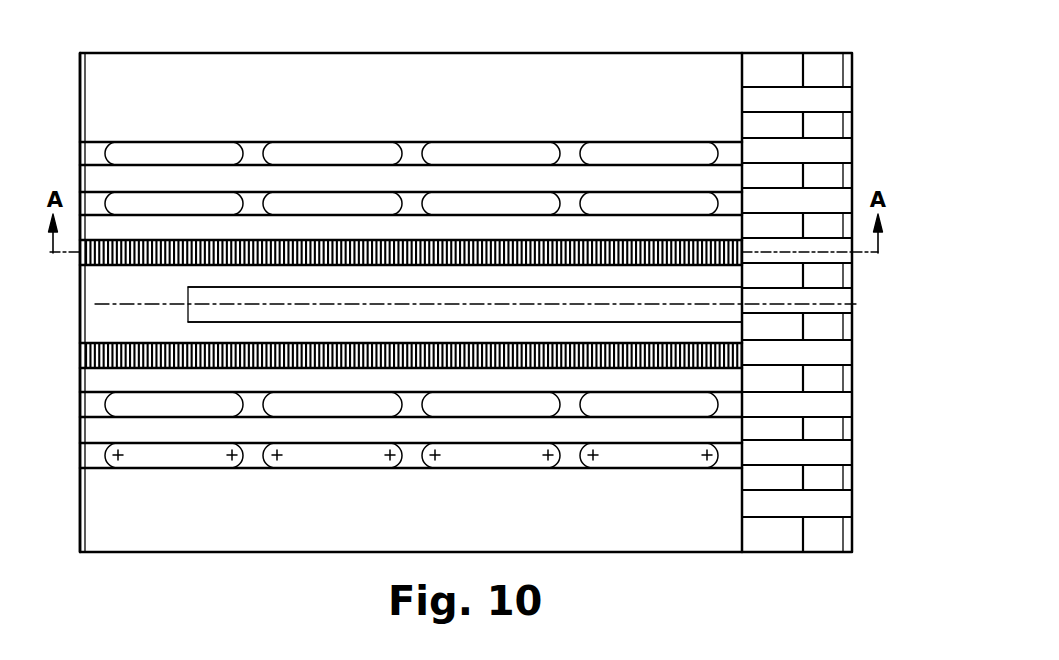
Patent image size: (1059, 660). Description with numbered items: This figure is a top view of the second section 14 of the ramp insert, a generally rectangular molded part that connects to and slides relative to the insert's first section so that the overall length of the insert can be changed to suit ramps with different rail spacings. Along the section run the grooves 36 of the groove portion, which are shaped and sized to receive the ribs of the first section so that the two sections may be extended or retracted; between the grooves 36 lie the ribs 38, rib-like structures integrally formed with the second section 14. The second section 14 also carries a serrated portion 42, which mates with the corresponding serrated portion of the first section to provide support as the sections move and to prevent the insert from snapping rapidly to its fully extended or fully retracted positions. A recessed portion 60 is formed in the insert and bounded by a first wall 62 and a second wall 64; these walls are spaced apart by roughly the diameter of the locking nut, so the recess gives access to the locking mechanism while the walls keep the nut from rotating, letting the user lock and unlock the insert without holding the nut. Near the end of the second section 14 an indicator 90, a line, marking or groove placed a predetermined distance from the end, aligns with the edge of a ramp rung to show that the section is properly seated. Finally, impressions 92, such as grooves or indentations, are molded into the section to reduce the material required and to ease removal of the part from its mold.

The second section 14 is at (859, 83).
The grooves 36 is at (92, 208).
The ribs 38 is at (540, 230).
The serrated portion 42 is at (448, 243).
The recessed portion 60 is at (202, 312).
The first wall 62 is at (275, 290).
The second wall 64 is at (225, 320).
The indicator 90 is at (812, 480).
The impressions 92 is at (183, 155).